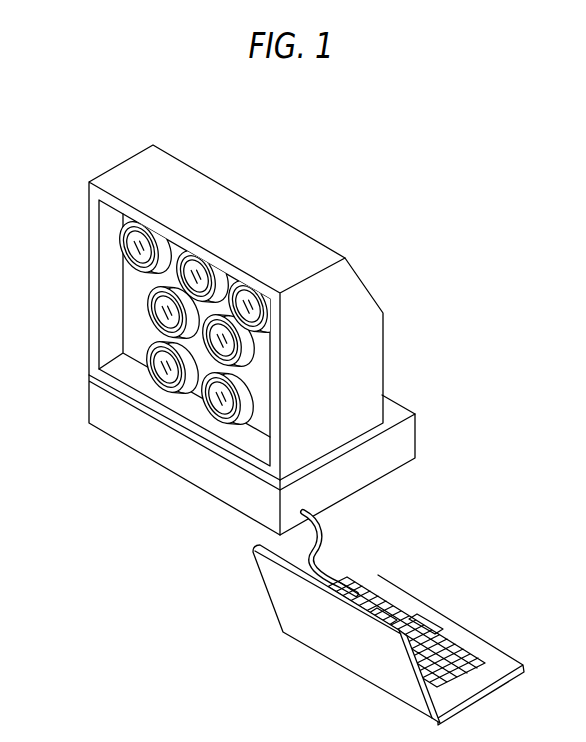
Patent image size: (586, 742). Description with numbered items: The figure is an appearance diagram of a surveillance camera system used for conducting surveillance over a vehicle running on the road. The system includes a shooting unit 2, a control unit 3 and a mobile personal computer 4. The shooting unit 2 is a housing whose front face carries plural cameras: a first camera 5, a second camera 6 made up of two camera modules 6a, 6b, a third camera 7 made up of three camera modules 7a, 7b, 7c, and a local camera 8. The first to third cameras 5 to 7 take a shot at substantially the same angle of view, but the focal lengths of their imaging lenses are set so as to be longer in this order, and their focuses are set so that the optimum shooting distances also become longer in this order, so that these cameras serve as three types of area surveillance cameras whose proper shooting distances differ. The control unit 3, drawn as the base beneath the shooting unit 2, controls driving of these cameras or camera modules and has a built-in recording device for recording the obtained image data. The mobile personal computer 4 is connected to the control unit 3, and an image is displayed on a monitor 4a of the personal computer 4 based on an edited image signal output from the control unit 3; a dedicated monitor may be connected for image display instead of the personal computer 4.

The shooting unit 2 is at (383, 338).
The control unit 3 is at (413, 437).
The mobile personal computer 4 is at (412, 596).
The monitor 4a is at (318, 578).
The first camera 5 is at (217, 397).
The second camera 6 is at (52, 288).
The camera module 6a is at (173, 312).
The camera module 6b is at (228, 340).
The third camera 7 is at (212, 123).
The camera module 7a is at (145, 247).
The camera module 7b is at (202, 276).
The camera module 7c is at (243, 284).
The local camera 8 is at (162, 364).